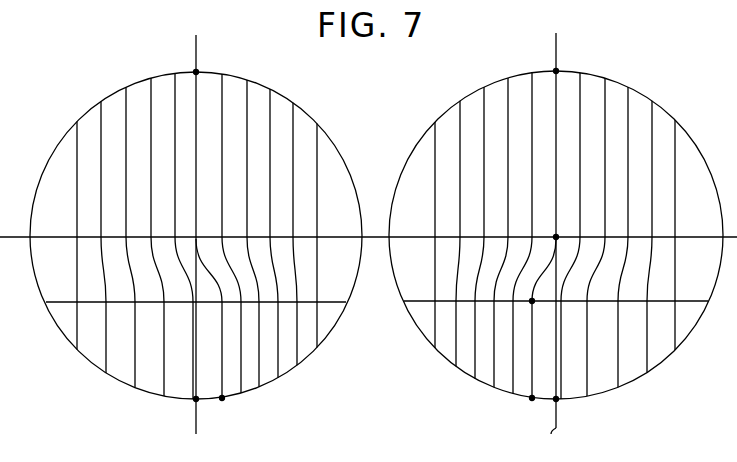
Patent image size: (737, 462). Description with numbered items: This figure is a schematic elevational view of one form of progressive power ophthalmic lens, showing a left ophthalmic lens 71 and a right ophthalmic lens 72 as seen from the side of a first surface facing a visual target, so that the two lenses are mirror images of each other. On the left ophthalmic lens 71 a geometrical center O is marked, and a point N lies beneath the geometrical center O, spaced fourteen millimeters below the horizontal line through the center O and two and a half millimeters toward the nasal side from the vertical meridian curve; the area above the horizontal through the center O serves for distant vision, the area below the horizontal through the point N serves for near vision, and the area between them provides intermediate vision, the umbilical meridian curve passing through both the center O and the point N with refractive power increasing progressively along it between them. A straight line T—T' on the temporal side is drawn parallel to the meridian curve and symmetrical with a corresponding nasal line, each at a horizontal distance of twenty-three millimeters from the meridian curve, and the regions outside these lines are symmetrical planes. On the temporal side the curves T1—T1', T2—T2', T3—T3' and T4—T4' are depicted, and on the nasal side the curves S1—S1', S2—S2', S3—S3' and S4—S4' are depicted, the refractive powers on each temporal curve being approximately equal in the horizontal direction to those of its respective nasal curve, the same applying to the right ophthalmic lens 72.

The left ophthalmic lens 71 is at (556, 239).
The right ophthalmic lens 72 is at (196, 230).
The straight line T—T' T is at (683, 237).
The curve S1—S1' S1 is at (522, 237).
The curve S2—S2' S2 is at (499, 233).
The curve S3—S3' S3 is at (476, 238).
The curve S4—S4' S4 is at (451, 237).
The curve T1—T1' T1 is at (576, 239).
The curve T2—T2' T2 is at (598, 238).
The curve T3—T3' T3 is at (630, 242).
The curve T4—T4' T4 is at (660, 240).
The geometrical center O is at (564, 225).
The point N is at (525, 316).